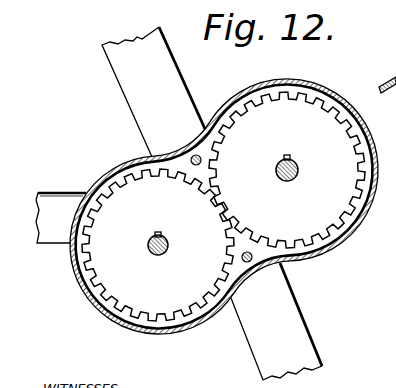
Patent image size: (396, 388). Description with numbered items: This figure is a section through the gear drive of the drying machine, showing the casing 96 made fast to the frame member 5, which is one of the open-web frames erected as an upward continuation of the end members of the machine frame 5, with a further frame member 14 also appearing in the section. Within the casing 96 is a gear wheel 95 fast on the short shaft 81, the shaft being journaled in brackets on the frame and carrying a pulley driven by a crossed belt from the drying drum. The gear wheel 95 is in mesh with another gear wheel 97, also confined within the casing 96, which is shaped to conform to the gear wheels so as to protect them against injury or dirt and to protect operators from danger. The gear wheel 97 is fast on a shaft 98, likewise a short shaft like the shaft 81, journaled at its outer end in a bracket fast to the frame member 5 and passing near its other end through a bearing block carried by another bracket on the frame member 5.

The casing 96 is at (224, 225).
The gear wheel 95 is at (158, 245).
The short shaft 81 is at (157, 256).
The gear wheel 97 is at (287, 170).
The shaft 98 is at (288, 181).
The frame 5 is at (212, 203).
The frame member 14 is at (387, 192).